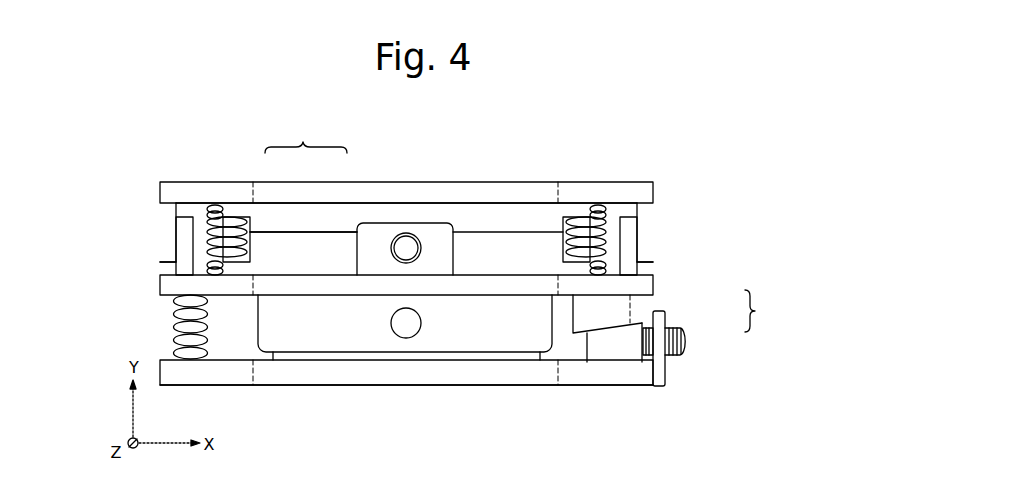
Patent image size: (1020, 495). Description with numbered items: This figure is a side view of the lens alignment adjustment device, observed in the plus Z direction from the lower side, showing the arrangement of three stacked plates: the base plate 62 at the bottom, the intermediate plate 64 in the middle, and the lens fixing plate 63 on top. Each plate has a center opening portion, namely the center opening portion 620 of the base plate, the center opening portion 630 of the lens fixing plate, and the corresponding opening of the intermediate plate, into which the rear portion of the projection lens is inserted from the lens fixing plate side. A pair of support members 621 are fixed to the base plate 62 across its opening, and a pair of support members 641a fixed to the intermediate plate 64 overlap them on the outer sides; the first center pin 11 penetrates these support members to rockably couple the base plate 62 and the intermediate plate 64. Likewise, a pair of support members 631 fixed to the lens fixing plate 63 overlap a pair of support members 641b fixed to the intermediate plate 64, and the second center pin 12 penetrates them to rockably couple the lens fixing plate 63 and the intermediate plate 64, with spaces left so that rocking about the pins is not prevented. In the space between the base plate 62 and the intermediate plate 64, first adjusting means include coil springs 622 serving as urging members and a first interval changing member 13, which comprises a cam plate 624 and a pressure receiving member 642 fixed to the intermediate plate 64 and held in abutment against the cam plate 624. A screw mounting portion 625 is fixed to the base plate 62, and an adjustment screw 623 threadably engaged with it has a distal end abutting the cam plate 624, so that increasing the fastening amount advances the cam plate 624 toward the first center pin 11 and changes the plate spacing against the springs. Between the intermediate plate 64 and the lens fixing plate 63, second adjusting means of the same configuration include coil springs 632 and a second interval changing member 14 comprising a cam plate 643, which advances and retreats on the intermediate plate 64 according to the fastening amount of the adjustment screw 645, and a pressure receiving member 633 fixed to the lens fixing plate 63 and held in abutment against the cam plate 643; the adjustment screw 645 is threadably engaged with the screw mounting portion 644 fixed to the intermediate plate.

The first center pin 11 is at (407, 328).
The second center pin 12 is at (160, 258).
The first interval changing member 13 is at (759, 311).
The second interval changing member 14 is at (306, 137).
The base plate 62 is at (608, 373).
The lens fixing plate 63 is at (458, 192).
The intermediate plate 64 is at (650, 283).
The center opening portion 620 is at (558, 370).
The support member 621 is at (320, 357).
The coil spring 622 is at (175, 330).
The adjustment screw 623 is at (687, 352).
The cam plate 624 is at (640, 326).
The screw mounting portion 625 is at (665, 373).
The center opening portion 630 is at (560, 202).
The support member 631 is at (160, 217).
The coil spring 632 is at (206, 218).
The pressure receiving member 633 is at (282, 222).
The support member 641a is at (452, 342).
The support member 641b is at (183, 217).
The pressure receiving member 642 is at (622, 308).
The cam plate 643 is at (328, 247).
The screw mounting portion 644 is at (373, 237).
The adjustment screw 645 is at (407, 240).